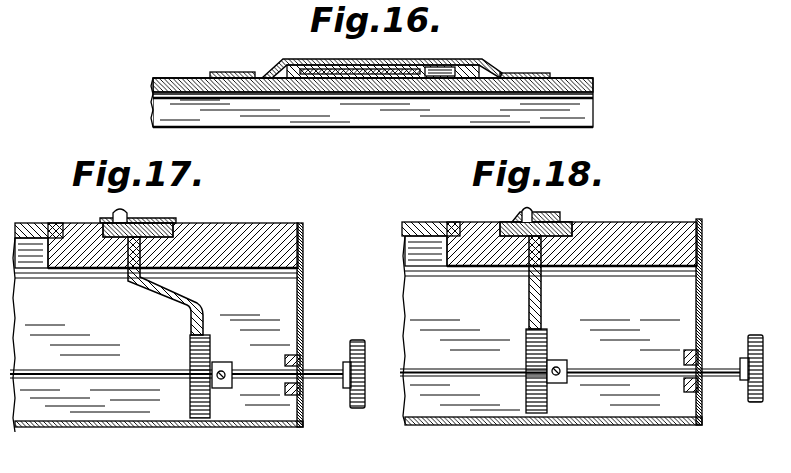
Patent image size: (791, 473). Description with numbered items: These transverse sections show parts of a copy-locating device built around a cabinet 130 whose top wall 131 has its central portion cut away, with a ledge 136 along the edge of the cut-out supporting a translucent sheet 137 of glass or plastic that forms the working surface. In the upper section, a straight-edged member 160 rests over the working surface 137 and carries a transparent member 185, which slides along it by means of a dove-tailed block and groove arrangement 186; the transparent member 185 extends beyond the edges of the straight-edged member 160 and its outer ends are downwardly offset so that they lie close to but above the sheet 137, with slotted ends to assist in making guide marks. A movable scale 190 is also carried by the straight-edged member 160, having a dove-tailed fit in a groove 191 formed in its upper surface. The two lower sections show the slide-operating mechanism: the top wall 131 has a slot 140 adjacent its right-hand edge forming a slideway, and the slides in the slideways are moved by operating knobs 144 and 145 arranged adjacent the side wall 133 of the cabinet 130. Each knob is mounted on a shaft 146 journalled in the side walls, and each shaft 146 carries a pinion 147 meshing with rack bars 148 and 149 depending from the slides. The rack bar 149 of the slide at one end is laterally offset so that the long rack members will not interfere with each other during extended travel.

In FIG. 17, the cabinet 130 is at (82, 403).
In FIG. 18, the cabinet 130 is at (603, 398).
In FIG. 16, the top wall 131 is at (593, 100).
In FIG. 17, the top wall 131 is at (240, 236).
In FIG. 18, the top wall 131 is at (635, 234).
In FIG. 17, the side wall 133 is at (303, 300).
In FIG. 18, the side wall 133 is at (703, 296).
In FIG. 17, the ledge 136 is at (58, 240).
In FIG. 18, the ledge 136 is at (450, 264).
In FIG. 16, the translucent sheet 137 is at (312, 85).
In FIG. 17, the translucent sheet 137 is at (57, 234).
In FIG. 18, the translucent sheet 137 is at (438, 210).
In FIG. 18, the slot 140 is at (585, 234).
In FIG. 17, the operating knob 144 is at (356, 340).
In FIG. 18, the operating knob 145 is at (752, 335).
In FIG. 17, the shaft 146 is at (107, 380).
In FIG. 18, the shaft 146 is at (614, 370).
In FIG. 18, the pinion 147 is at (548, 341).
In FIG. 18, the rack bar 148 is at (543, 301).
In FIG. 17, the rack bar 149 is at (182, 290).
In FIG. 16, the straight-edged member 160 is at (500, 59).
In FIG. 16, the transparent member 185 is at (417, 63).
In FIG. 16, the dove-tailed block and groove arrangement 186 is at (380, 66).
In FIG. 16, the movable scale 190 is at (428, 67).
In FIG. 16, the groove 191 is at (448, 72).